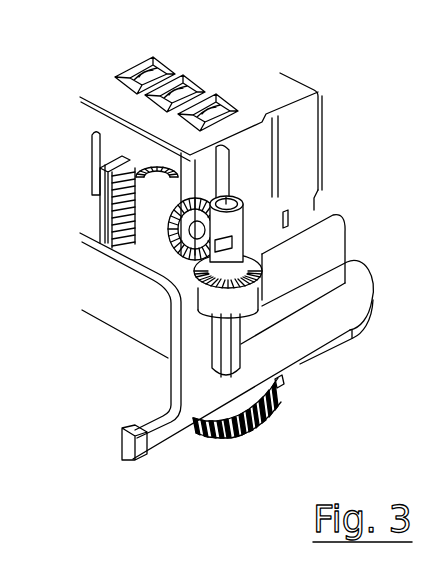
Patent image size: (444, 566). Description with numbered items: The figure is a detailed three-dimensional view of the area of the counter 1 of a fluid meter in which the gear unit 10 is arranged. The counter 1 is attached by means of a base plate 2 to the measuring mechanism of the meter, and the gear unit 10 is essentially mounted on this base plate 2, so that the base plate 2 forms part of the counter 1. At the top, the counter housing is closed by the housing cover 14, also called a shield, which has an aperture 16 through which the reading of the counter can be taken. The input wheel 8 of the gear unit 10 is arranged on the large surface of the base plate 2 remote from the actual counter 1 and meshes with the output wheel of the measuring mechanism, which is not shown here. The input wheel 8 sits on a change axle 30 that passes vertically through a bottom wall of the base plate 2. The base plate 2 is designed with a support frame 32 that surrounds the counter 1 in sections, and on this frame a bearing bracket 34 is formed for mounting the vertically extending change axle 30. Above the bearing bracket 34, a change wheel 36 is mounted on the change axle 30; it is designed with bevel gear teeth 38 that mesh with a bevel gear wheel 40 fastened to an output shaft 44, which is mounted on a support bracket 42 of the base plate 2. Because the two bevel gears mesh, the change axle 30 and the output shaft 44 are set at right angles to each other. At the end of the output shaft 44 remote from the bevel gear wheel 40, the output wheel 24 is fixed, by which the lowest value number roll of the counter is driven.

The counter 1 is at (338, 99).
The base plate 2 is at (360, 297).
The input wheel 8 is at (283, 410).
The gear unit 10 is at (256, 325).
The housing cover 14 is at (305, 142).
The aperture 16 is at (233, 98).
The output wheel 24 is at (133, 248).
The change axle 30 is at (284, 380).
The support frame 32 is at (323, 252).
The bearing bracket 34 is at (343, 272).
The change wheel 36 is at (252, 238).
The bevel gear teeth 38 is at (205, 300).
The bevel gear wheel 40 is at (126, 219).
The support bracket 42 is at (118, 210).
The output shaft 44 is at (180, 200).